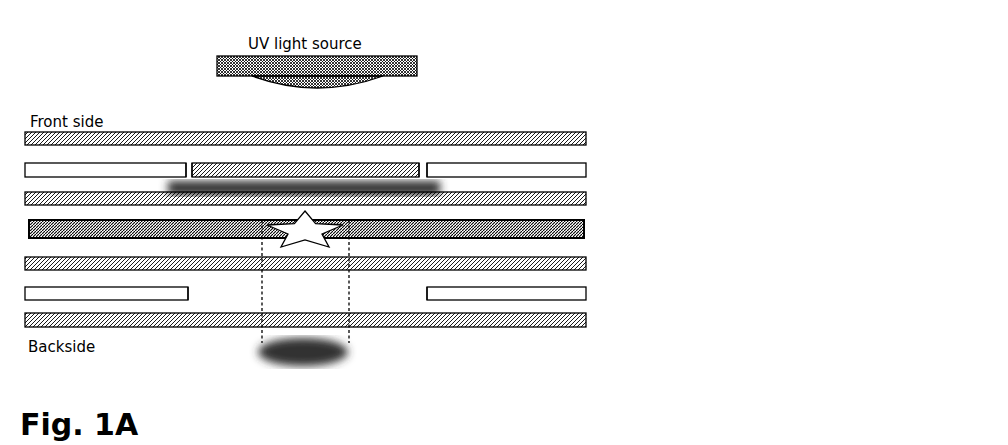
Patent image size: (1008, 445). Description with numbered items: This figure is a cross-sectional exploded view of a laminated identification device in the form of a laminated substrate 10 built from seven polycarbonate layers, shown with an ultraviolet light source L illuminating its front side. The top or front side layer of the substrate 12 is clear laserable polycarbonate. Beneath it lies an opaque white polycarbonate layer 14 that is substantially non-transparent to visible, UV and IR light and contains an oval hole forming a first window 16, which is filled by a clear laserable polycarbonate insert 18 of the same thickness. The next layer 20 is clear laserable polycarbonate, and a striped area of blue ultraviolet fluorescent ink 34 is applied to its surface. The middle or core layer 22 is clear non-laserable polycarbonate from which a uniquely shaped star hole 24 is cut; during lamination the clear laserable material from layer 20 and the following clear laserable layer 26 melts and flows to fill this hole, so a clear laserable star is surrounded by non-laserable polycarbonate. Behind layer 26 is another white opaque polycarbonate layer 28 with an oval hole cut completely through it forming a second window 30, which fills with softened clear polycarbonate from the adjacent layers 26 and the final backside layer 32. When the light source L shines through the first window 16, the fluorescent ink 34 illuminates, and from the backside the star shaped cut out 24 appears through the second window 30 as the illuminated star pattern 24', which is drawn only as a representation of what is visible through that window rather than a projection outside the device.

The laminated substrate 10 is at (594, 101).
The front side layer 12 is at (588, 138).
The inner white polycarbonate layer 14 is at (588, 171).
The first window 16 is at (189, 162).
The clear laserable polycarbonate insert 18 is at (242, 162).
The clear laserable polycarbonate layer 20 is at (588, 203).
The core layer 22 is at (588, 231).
The star shaped hole 24 is at (312, 216).
The illuminated star pattern 24' is at (327, 370).
The clear laserable polycarbonate layer 26 is at (588, 262).
The opaque polycarbonate layer 28 is at (588, 290).
The second window 30 is at (220, 292).
The backside layer 32 is at (588, 319).
The ultraviolet fluorescent ink 34 is at (404, 185).
The ultraviolet light source L is at (419, 65).